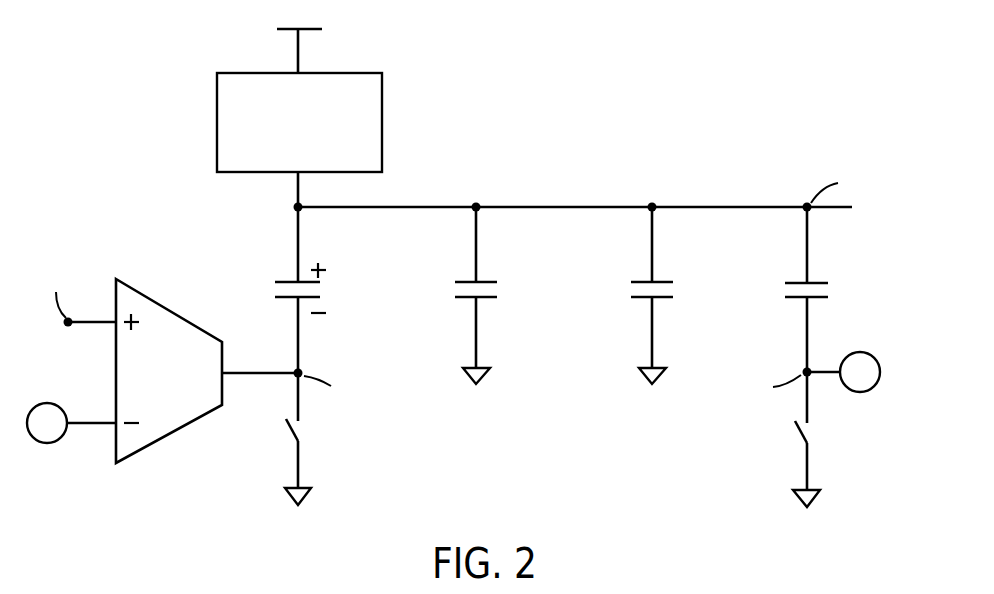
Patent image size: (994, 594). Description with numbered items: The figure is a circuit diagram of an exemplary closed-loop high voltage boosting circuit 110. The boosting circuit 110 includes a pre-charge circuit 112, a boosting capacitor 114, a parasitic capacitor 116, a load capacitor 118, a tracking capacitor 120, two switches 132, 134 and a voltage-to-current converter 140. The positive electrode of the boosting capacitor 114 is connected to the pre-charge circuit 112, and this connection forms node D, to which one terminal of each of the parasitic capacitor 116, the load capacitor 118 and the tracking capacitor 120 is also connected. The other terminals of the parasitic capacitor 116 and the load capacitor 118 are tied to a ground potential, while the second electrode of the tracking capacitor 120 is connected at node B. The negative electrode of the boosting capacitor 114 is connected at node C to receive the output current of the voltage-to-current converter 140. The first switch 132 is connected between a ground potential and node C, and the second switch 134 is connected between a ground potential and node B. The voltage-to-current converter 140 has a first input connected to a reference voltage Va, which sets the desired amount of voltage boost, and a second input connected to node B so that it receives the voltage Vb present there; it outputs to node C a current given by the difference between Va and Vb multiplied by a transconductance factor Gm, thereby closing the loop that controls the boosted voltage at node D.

The closed-loop high voltage boosting circuit 110 is at (604, 76).
The pre-charge circuit 112 is at (383, 123).
The boosting capacitor 114 is at (283, 305).
The parasitic capacitor 116 is at (461, 305).
The load capacitor 118 is at (637, 305).
The tracking capacitor 120 is at (794, 305).
The first switch 132 is at (302, 429).
The second switch 134 is at (810, 431).
The voltage-to-current converter 140 is at (173, 433).